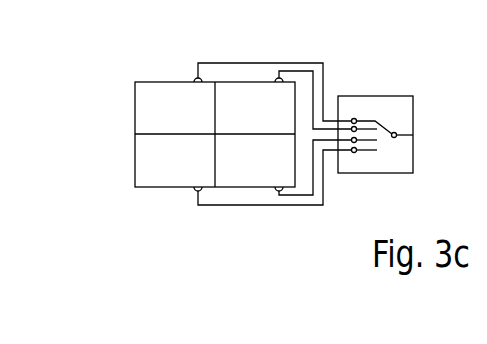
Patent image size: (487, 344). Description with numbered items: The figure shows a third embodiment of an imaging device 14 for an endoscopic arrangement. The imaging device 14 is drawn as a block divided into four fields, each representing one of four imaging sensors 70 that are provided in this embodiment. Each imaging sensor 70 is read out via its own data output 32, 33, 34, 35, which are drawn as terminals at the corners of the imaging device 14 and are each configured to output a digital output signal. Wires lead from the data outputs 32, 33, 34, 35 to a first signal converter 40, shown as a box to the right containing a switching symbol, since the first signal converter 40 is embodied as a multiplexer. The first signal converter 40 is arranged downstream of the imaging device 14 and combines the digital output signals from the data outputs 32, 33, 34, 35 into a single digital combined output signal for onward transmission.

The imaging device 14 is at (107, 95).
The data output 32 is at (196, 79).
The data output 33 is at (277, 79).
The data output 34 is at (197, 190).
The data output 35 is at (277, 190).
The first signal converter 40 is at (372, 96).
The imaging sensor 70 is at (164, 118).